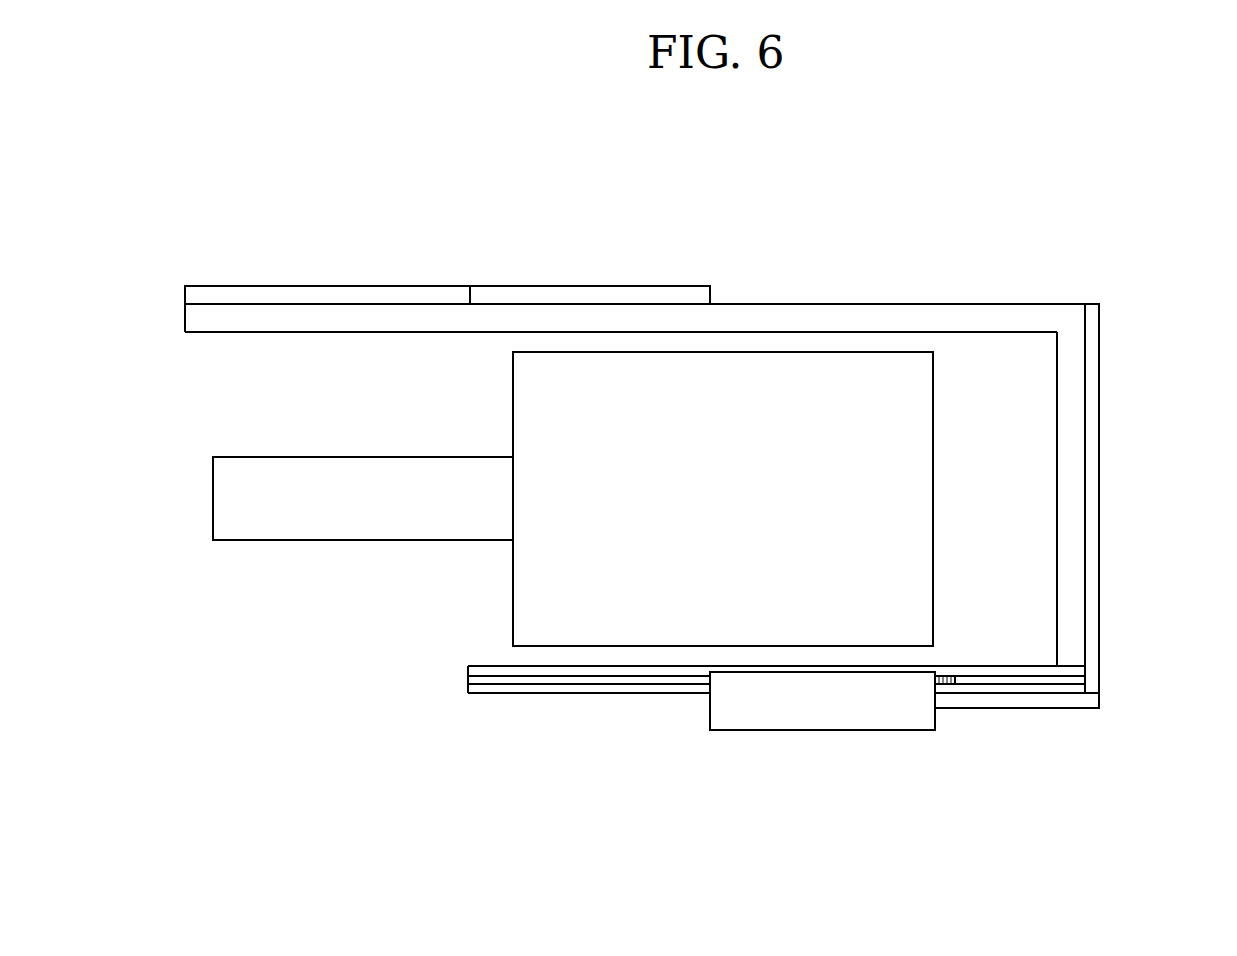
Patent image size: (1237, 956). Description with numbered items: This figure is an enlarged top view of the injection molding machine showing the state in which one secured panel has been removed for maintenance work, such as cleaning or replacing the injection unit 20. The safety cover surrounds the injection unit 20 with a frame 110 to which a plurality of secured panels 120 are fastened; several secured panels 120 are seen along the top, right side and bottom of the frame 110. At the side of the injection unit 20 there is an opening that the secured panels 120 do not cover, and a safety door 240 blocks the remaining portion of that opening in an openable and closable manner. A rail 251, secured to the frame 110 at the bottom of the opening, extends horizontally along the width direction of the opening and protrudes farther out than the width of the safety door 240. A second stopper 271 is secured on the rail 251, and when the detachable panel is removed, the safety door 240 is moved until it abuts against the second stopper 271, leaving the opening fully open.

The injection unit 20 is at (464, 577).
The frame 110 is at (860, 303).
The secured panel 120 is at (313, 286).
The safety door 240 is at (818, 731).
The rail 251 is at (1072, 684).
The second stopper 271 is at (943, 685).